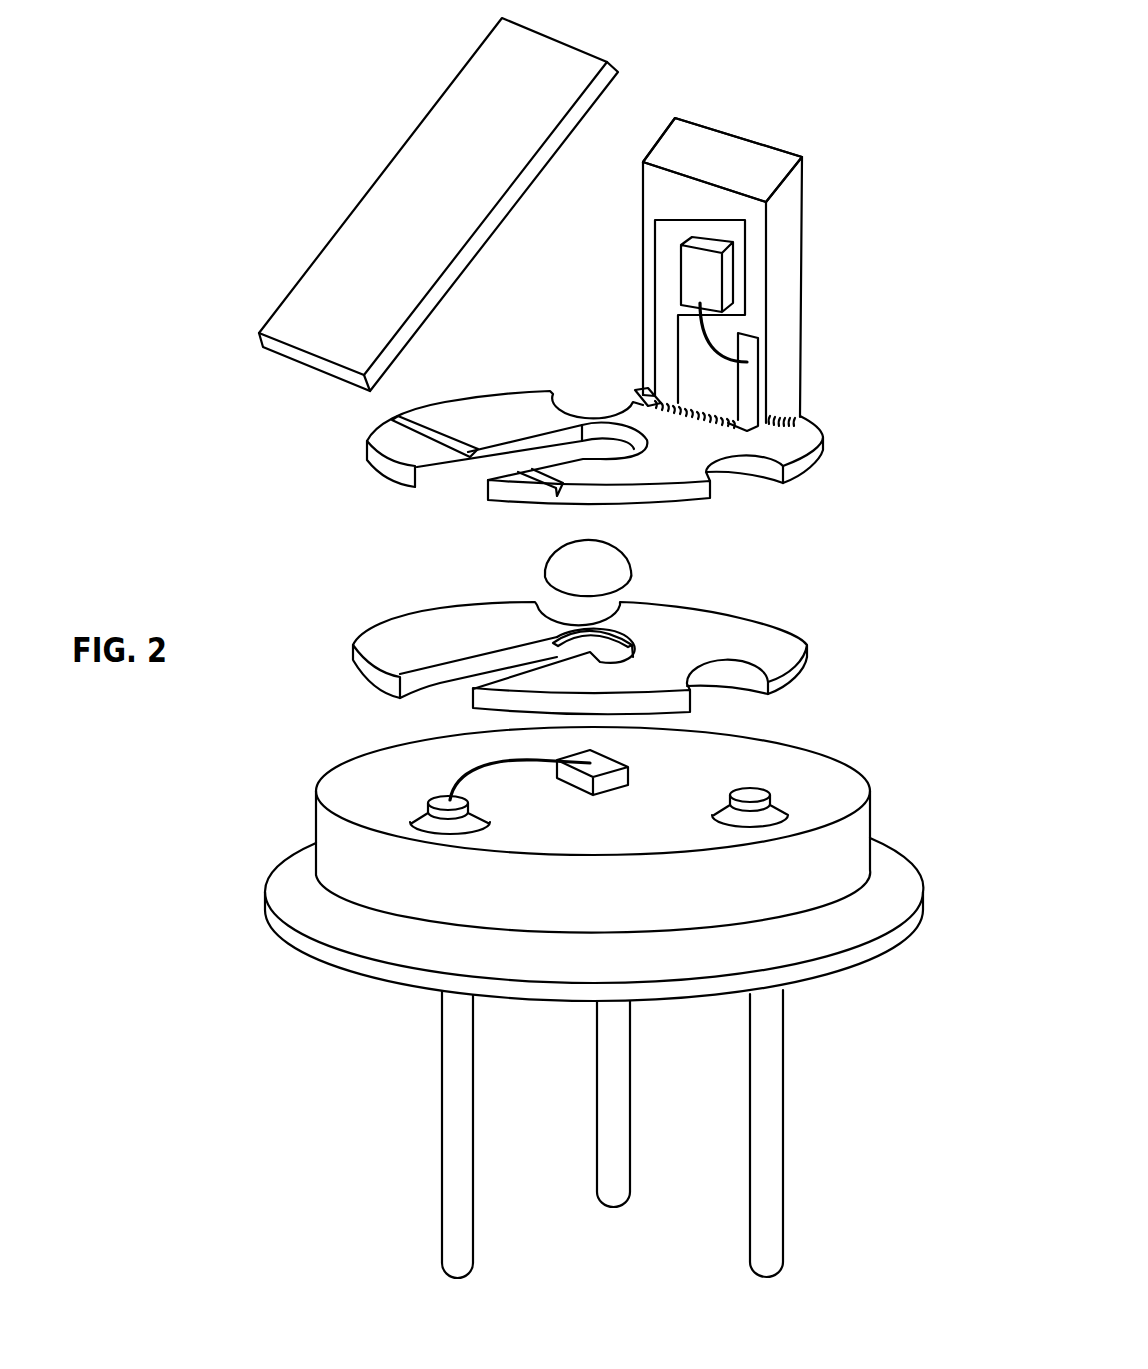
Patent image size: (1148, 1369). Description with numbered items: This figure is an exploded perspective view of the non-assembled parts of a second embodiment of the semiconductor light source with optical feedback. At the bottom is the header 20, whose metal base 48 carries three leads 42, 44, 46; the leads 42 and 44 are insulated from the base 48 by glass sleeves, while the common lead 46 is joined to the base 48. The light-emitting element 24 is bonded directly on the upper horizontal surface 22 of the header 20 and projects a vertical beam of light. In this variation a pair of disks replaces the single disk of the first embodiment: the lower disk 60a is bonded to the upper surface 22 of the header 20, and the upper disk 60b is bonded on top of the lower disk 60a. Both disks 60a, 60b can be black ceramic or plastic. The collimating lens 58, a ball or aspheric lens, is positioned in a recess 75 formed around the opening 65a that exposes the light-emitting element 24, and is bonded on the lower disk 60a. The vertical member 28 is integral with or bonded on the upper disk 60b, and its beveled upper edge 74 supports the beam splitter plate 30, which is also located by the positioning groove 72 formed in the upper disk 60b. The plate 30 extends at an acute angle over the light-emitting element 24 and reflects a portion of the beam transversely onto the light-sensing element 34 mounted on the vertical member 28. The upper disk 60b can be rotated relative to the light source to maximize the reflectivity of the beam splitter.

The header 20 is at (315, 1093).
The upper horizontal surface 22 is at (355, 790).
The light-emitting element 24 is at (613, 778).
The vertical member 28 is at (783, 233).
The beam splitter plate 30 is at (448, 135).
The light-sensing element 34 is at (706, 277).
The lead 42 is at (453, 1083).
The lead 44 is at (760, 1150).
The common lead 46 is at (608, 1120).
The metal base 48 is at (847, 828).
The collimating lens 58 is at (602, 567).
The lower disk 60a is at (608, 627).
The upper disk 60b is at (637, 407).
The opening 65a is at (617, 633).
The beam splitter plate positioning groove 72 is at (430, 417).
The upper edge of the vertical member 74 is at (699, 165).
The recess 75 is at (473, 613).